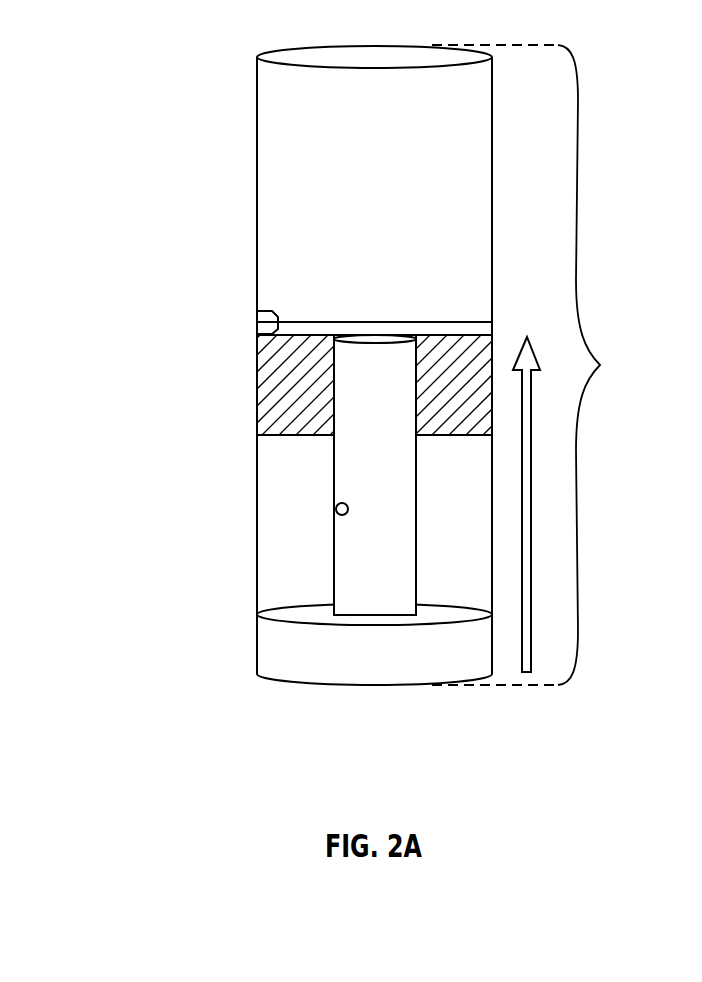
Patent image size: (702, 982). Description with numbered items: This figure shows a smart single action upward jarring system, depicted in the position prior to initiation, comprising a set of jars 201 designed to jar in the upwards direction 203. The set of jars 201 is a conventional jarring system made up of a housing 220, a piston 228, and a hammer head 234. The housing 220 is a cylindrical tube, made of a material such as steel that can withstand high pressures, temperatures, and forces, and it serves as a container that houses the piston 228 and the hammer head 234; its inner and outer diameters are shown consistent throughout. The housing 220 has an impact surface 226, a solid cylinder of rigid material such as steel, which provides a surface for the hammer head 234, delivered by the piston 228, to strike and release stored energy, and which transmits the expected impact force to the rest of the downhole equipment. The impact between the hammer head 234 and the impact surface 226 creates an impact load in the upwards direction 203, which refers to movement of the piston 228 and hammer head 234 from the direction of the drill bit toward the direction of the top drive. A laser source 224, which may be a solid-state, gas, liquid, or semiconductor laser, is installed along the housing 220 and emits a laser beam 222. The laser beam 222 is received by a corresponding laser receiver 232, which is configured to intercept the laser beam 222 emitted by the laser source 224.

The set of jars 201 is at (556, 365).
The upwards direction 203 is at (527, 673).
The housing 220 is at (257, 208).
The laser beam 222 is at (327, 322).
The laser source 224 is at (257, 324).
The impact surface 226 is at (279, 435).
The piston 228 is at (333, 467).
The laser receiver 232 is at (336, 509).
The hammer head 234 is at (342, 657).